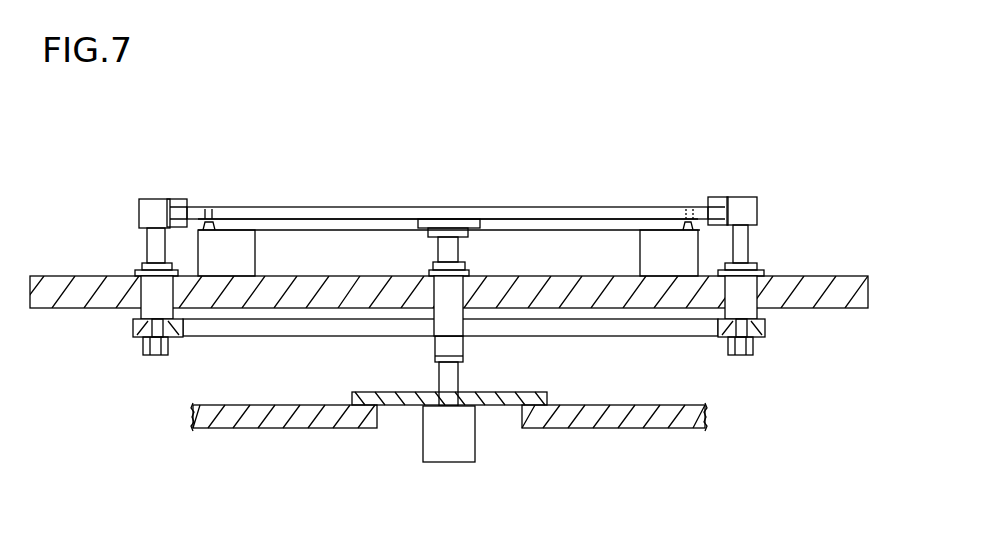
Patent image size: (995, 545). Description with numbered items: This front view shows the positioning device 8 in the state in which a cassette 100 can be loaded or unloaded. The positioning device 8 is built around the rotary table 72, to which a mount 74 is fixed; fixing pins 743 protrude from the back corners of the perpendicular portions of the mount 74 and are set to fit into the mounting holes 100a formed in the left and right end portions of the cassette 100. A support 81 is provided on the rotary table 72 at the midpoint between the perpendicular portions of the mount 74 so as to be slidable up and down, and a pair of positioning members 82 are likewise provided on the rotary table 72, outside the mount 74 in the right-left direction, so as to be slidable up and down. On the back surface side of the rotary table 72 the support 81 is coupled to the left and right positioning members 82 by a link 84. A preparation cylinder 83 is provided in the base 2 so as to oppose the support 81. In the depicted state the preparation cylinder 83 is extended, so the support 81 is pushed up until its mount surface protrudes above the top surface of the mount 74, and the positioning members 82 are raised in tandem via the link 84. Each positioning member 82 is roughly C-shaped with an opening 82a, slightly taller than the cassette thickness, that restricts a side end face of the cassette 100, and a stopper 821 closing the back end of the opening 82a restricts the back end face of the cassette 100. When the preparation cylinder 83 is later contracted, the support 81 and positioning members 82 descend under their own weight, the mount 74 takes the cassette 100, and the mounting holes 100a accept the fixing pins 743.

The base 2 is at (706, 418).
The positioning device 8 is at (122, 364).
The rotary table 72 is at (57, 276).
The mount 74 is at (320, 230).
The fixing pin 743 is at (213, 227).
The support 81 is at (450, 225).
The positioning member 82 is at (146, 196).
The stopper 821 is at (181, 198).
The opening 82a is at (712, 197).
The preparation cylinder 83 is at (467, 436).
The link 84 is at (245, 337).
The cassette 100 is at (390, 206).
The mounting hole 100a is at (687, 207).